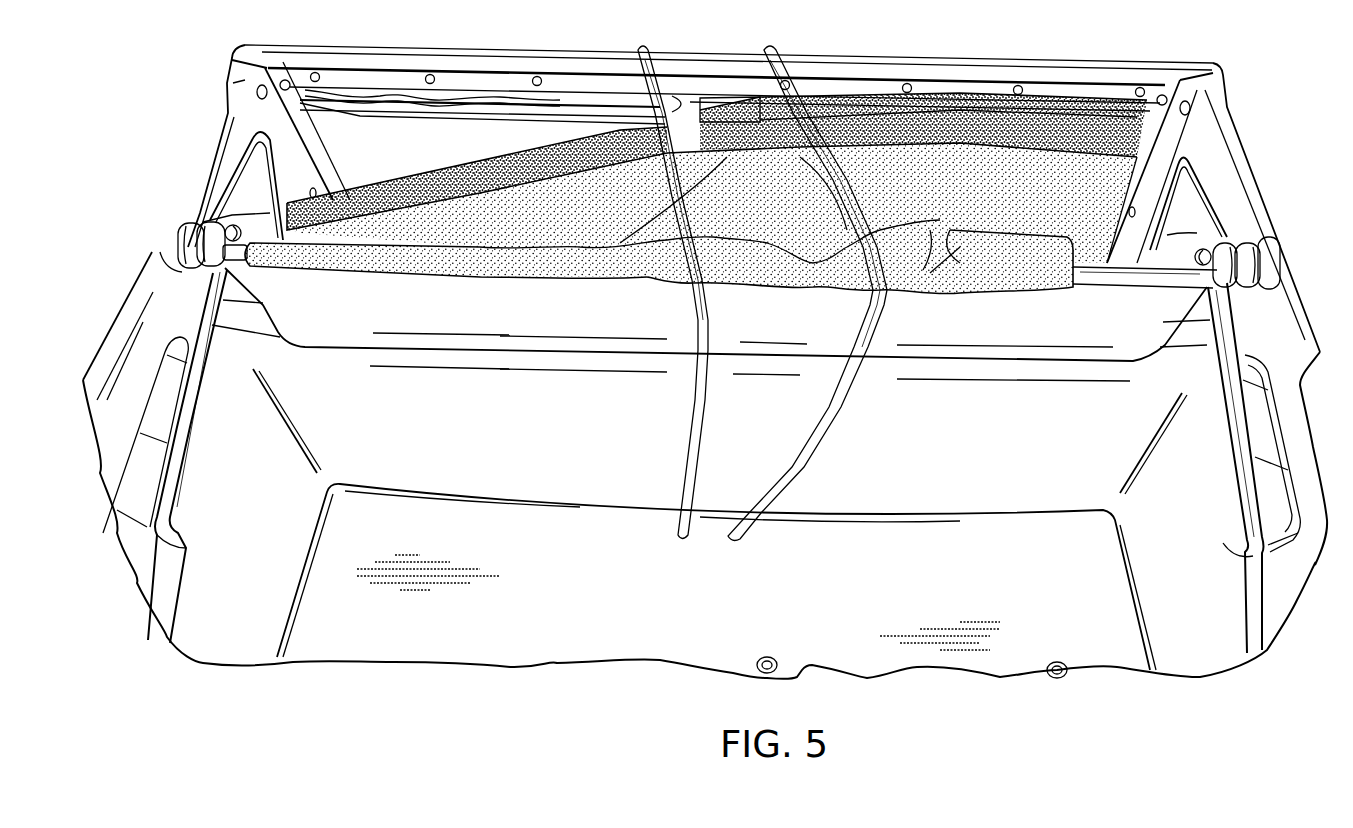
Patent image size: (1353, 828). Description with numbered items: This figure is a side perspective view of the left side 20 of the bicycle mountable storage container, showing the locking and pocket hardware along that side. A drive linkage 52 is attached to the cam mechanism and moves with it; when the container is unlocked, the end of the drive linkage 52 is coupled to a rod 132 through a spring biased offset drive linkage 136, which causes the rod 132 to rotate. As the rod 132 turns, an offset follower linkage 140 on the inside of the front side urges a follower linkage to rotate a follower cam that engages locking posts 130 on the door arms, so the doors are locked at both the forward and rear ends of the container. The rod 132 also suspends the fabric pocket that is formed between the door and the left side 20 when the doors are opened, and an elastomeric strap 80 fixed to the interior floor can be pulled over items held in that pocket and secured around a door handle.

The left side 20 is at (990, 330).
The drive linkage 52 is at (197, 425).
The elastomeric strap 80 is at (777, 457).
The locking post 130 is at (240, 75).
The rod 132 is at (1123, 287).
The spring biased offset drive linkage 136 is at (205, 212).
The offset follower linkage 140 is at (1247, 243).